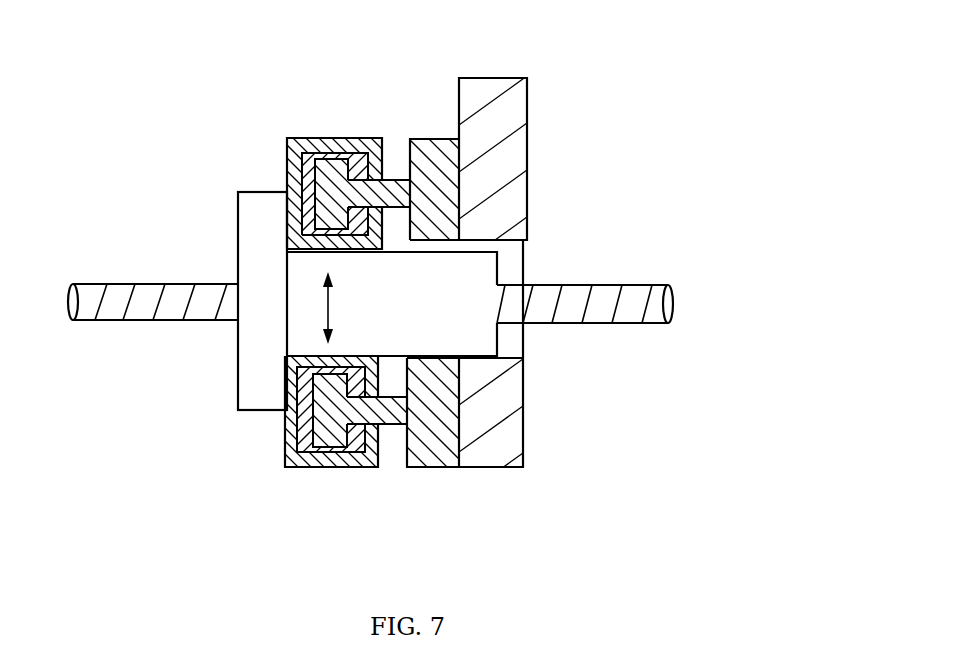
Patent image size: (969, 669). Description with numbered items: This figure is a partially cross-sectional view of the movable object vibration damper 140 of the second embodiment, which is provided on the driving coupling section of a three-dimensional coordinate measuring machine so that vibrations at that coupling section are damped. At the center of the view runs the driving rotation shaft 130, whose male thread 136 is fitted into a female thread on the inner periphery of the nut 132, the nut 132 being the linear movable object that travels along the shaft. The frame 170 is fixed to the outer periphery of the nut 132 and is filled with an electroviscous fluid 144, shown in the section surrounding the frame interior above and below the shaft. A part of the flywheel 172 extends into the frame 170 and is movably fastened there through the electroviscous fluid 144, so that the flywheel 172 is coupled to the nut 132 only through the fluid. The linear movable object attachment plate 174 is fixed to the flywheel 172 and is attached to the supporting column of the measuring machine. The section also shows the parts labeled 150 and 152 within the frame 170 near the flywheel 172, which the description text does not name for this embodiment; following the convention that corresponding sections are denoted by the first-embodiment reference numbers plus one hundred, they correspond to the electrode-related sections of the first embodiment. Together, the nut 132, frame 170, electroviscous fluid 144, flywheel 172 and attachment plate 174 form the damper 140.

The driving rotation shaft 130 is at (145, 292).
The nut 132 is at (293, 333).
The male thread 136 is at (112, 296).
The movable object vibration damper 140 is at (404, 295).
The electroviscous fluid 144 is at (313, 153).
The slide core 150 is at (363, 157).
The connecting stem 152 is at (395, 176).
The frame 170 is at (295, 138).
The flywheel 172 is at (428, 139).
The linear movable object attachment plate 174 is at (507, 145).